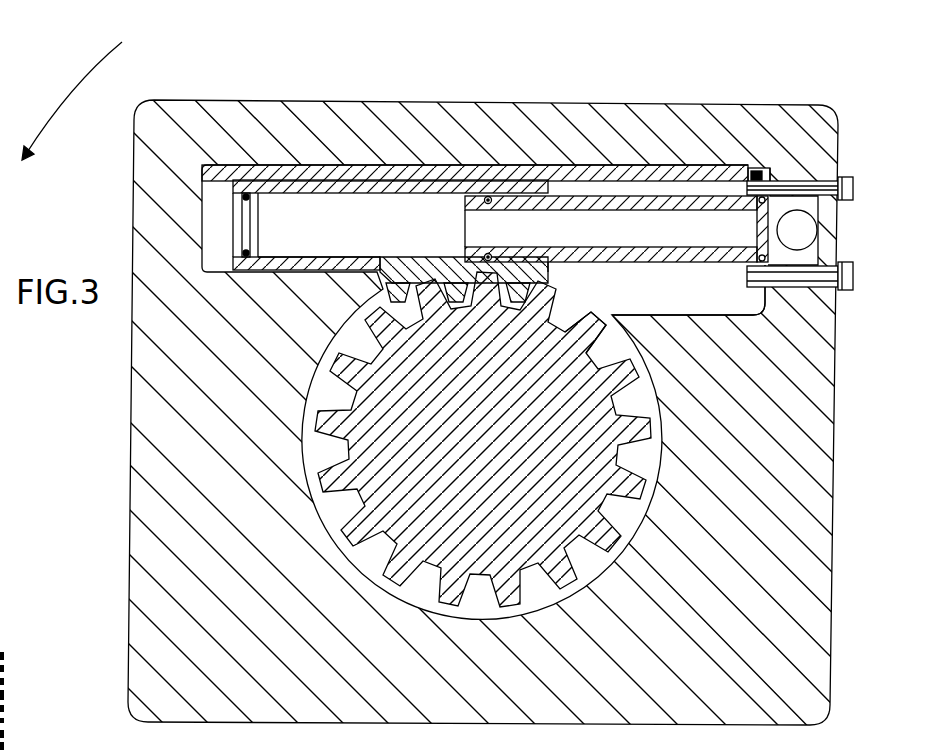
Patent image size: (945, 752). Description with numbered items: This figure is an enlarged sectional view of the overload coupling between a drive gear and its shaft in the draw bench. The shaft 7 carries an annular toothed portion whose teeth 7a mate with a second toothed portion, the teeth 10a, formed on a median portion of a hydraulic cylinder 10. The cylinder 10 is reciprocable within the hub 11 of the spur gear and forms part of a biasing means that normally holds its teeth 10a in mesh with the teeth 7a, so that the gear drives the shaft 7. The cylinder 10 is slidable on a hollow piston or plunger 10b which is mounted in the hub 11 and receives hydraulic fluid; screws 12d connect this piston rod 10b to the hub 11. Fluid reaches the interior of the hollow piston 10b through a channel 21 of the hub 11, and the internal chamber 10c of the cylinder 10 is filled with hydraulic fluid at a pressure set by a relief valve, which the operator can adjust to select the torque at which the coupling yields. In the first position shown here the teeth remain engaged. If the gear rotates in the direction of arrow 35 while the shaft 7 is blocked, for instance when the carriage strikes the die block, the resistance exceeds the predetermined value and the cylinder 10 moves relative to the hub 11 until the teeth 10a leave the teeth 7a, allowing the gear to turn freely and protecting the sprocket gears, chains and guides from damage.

The shaft 7 is at (484, 442).
The teeth 7a is at (590, 322).
The hydraulic cylinder 10 is at (288, 263).
The teeth 10a is at (403, 280).
The hollow piston 10b is at (693, 264).
The internal chamber 10c is at (362, 244).
The hub 11 is at (753, 471).
The screws 12d is at (772, 180).
The channel 21 is at (797, 233).
The arrow 35 is at (82, 100).